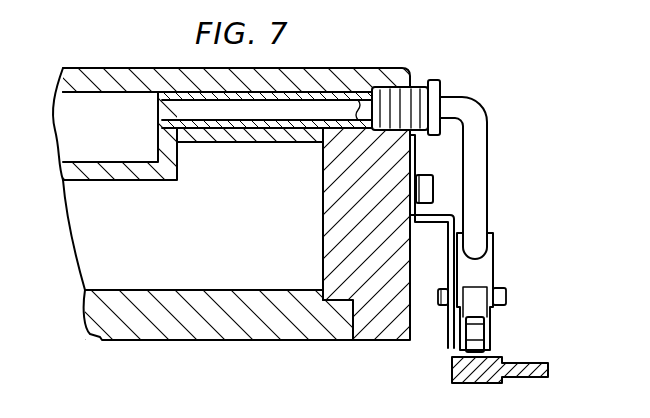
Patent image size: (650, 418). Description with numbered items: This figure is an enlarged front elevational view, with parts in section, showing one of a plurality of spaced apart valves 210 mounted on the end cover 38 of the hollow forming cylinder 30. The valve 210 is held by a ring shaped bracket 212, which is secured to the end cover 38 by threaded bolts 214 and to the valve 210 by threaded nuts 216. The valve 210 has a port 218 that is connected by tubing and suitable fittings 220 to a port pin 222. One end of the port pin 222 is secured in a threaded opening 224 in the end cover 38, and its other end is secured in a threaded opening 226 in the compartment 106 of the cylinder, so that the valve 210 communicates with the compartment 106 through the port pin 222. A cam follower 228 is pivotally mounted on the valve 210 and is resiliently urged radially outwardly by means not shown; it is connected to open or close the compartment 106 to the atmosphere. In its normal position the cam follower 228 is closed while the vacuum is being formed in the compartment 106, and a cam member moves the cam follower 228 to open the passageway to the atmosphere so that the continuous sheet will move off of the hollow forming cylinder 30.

The compartment 106 is at (120, 143).
The threaded opening 226 is at (168, 129).
The port pin 222 is at (287, 112).
The threaded opening 224 is at (411, 88).
The fittings 220 is at (480, 137).
The threaded bolts 214 is at (430, 190).
The ring shaped bracket 212 is at (450, 247).
The port 218 is at (493, 247).
The valve 210 is at (493, 267).
The cam follower 228 is at (480, 330).
The threaded nuts 216 is at (443, 304).
The end cover 38 is at (332, 257).
The hollow forming cylinder 30 is at (182, 295).